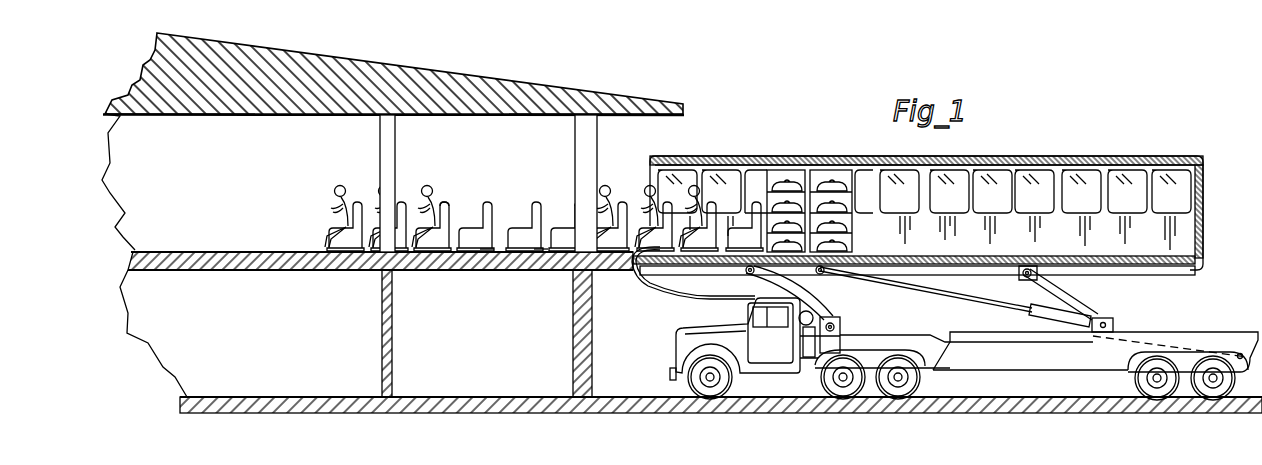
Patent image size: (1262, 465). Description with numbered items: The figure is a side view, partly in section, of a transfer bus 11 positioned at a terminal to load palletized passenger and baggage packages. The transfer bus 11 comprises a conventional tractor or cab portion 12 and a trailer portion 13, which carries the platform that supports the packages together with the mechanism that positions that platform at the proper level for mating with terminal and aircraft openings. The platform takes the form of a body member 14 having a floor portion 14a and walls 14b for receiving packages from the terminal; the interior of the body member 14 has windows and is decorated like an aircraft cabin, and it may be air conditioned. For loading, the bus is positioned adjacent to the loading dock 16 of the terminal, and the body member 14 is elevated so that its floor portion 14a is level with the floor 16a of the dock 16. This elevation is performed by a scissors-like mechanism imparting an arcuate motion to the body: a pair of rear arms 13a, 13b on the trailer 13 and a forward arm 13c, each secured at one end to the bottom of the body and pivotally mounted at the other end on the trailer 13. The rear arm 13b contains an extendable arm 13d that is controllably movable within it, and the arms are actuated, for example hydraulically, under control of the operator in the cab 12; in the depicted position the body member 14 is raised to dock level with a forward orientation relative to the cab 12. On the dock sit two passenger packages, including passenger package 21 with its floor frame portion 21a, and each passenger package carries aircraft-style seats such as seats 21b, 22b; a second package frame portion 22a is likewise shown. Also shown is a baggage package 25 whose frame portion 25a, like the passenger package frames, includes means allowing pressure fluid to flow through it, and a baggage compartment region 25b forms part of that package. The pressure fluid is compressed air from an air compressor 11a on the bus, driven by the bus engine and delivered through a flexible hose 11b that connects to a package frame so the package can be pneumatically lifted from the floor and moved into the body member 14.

The transfer bus 11 is at (862, 351).
The air compressor 11a is at (807, 368).
The flexible hose 11b is at (700, 290).
The cab portion 12 is at (780, 352).
The trailer portion 13 is at (1025, 365).
The rear arm 13a is at (1087, 306).
The rear arm 13b is at (1113, 326).
The forward arm 13c is at (822, 309).
The extendable arm 13d is at (973, 310).
The body member 14 is at (989, 242).
The floor portion 14a is at (1077, 263).
The walls 14b is at (1191, 254).
The loading dock 16 is at (439, 72).
The floor of dock 16a is at (623, 268).
The passenger package 21 is at (523, 202).
The floor frame portion 21a is at (487, 254).
The seats 21b is at (446, 204).
The seat track 22a is at (541, 254).
The seats 22b is at (580, 198).
The baggage package 25 is at (836, 188).
The frame portion 25a is at (803, 173).
The baggage compartment 25b is at (838, 172).